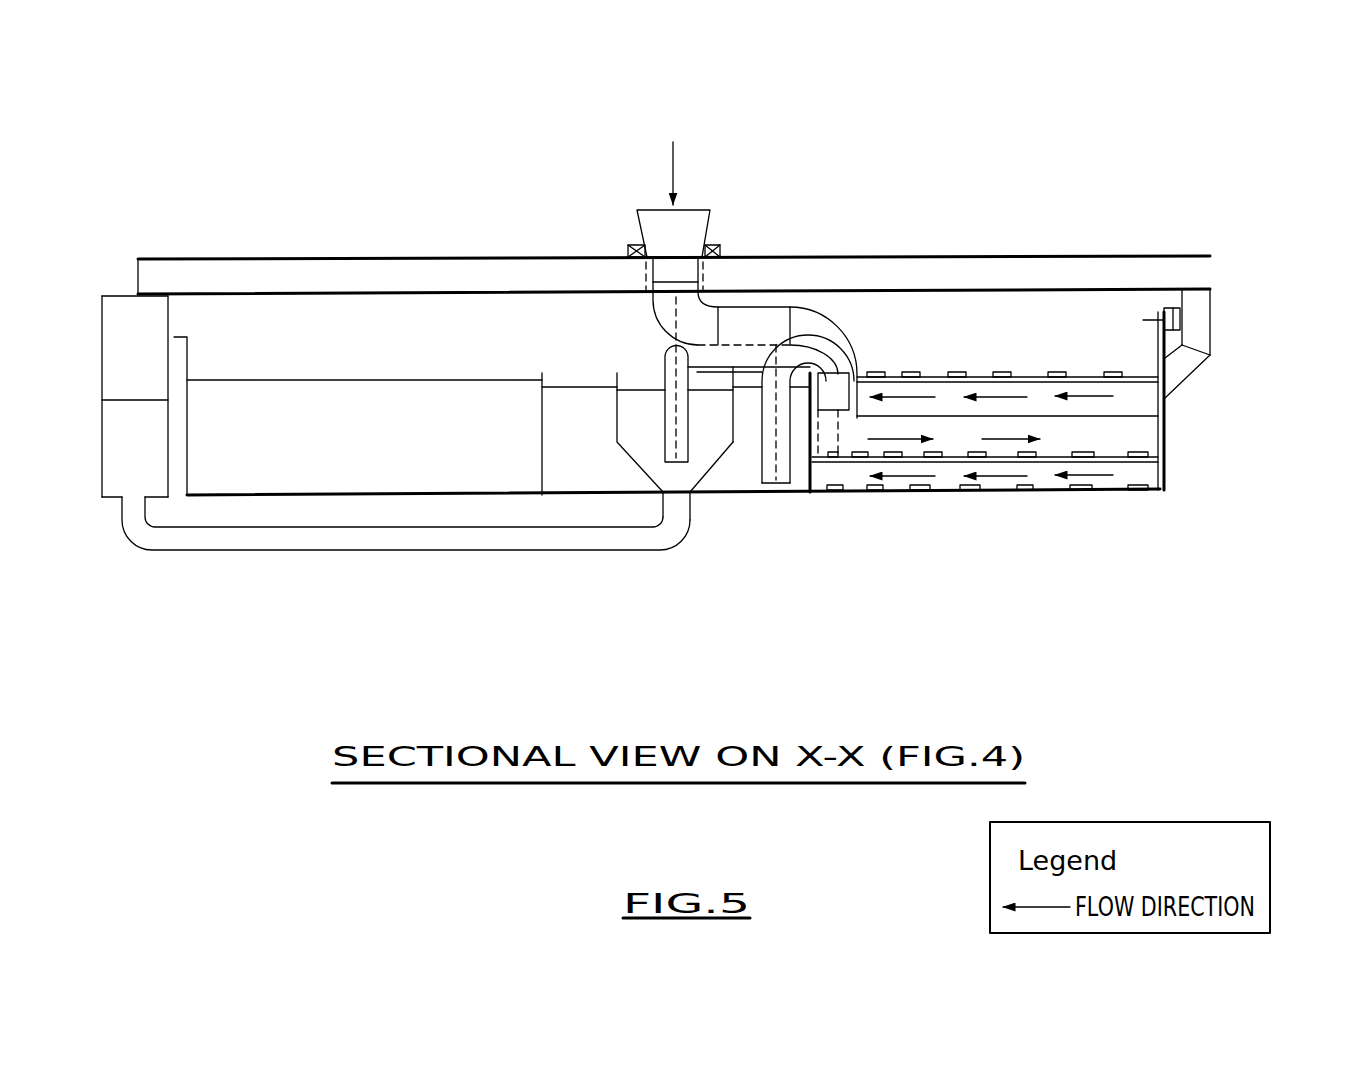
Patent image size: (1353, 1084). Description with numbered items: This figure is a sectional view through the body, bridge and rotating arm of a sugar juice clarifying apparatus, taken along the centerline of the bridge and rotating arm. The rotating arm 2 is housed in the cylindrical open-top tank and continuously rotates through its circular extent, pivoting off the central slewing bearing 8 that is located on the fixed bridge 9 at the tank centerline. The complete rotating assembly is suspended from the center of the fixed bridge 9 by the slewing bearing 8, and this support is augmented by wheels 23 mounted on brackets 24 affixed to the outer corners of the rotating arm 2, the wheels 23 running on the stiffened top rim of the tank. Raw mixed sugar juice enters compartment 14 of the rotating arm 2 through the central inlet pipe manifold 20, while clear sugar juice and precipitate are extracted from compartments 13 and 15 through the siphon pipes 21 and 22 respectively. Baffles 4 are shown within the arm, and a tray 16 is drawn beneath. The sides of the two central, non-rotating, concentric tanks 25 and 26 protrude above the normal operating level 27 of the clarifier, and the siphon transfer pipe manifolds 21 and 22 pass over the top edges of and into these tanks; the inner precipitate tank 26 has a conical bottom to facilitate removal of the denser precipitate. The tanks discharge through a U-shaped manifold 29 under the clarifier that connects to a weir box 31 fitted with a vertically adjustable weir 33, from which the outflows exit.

The rotating arm 2 is at (1165, 430).
The baffle 4 is at (980, 375).
The central slewing bearing 8 is at (723, 243).
The fixed bridge 9 is at (790, 255).
The compartment 13 is at (1145, 399).
The compartment 14 is at (1137, 437).
The compartment 15 is at (1163, 486).
The tray 16 is at (190, 446).
The raw mixed sugar juice inlet pipe manifold 20 is at (840, 320).
The siphon transfer pipe manifold 21 is at (780, 487).
The siphon transfer pipe manifold 22 is at (667, 347).
The wheels 23 is at (1182, 318).
The brackets 24 is at (1153, 338).
The central non-rotating concentric tank 25 is at (537, 408).
The inner precipitate tank 26 is at (700, 488).
The normal operating level 27 is at (367, 378).
The U-shaped manifold 29 is at (615, 551).
The weir box 31 is at (135, 396).
The vertically adjustable weir 33 is at (130, 398).